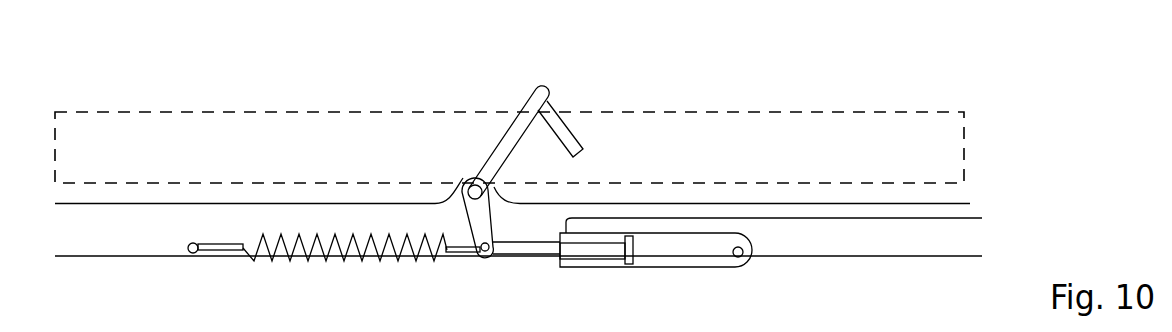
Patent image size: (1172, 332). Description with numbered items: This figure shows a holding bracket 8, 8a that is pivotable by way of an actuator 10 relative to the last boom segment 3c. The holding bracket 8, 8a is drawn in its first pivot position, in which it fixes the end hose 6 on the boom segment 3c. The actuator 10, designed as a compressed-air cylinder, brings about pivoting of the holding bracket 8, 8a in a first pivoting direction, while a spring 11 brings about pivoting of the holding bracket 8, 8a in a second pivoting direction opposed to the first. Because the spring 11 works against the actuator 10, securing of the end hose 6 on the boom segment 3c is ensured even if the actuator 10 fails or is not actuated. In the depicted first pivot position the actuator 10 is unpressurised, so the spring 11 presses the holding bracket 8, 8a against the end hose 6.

The boom segment 3c is at (334, 196).
The end hose 6 is at (758, 106).
The holding bracket 8 is at (526, 103).
The holding bracket 8a is at (540, 82).
The actuator 10 is at (680, 255).
The spring 11 is at (325, 259).